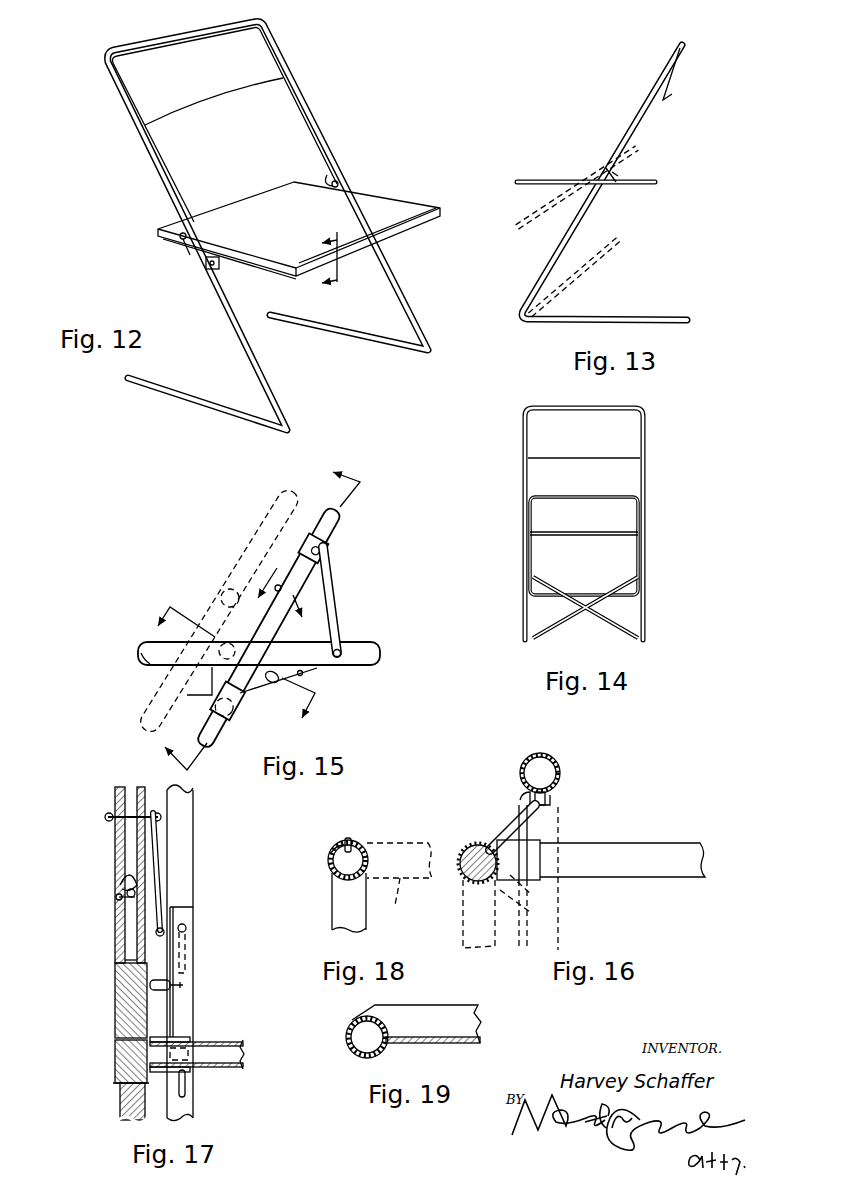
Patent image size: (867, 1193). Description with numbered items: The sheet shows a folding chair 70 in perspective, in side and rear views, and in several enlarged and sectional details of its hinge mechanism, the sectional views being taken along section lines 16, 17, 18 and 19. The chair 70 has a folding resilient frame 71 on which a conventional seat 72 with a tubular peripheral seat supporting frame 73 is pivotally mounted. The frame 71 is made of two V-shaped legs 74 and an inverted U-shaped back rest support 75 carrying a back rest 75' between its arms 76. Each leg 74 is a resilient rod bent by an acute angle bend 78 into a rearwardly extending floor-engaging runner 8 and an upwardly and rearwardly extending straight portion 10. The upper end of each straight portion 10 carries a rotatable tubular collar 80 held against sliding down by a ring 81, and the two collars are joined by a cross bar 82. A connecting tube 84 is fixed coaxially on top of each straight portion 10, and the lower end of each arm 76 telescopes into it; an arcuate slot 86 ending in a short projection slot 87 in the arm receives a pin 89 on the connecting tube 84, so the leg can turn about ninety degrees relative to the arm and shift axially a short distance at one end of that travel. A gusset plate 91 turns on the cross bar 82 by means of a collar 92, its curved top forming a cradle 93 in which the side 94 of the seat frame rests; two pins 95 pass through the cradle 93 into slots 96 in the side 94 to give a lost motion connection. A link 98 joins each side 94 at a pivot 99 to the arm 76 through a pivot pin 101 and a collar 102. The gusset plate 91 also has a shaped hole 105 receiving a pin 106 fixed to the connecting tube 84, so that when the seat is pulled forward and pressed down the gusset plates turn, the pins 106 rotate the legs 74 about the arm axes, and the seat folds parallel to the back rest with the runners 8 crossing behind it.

In FIG. 12, the floor-engaging runner 8 is at (362, 345).
In FIG. 13, the floor-engaging runner 8 is at (614, 317).
In FIG. 14, the floor-engaging runner 8 is at (613, 627).
In FIG. 18, the floor-engaging runner 8 is at (366, 912).
In FIG. 12, the straight portion 10 is at (251, 363).
In FIG. 13, the straight portion 10 is at (578, 229).
In FIG. 14, the straight portion 10 is at (645, 625).
In FIG. 17, the straight portion 10 is at (120, 1110).
In FIG. 15, the section line 16- 16 is at (243, 656).
In FIG. 15, the section line 17- 17 is at (272, 627).
In FIG. 15, the section line 18- 18 is at (290, 591).
In FIG. 12, the section line 19- 19 is at (342, 253).
In FIG. 12, the chair 70 is at (90, 147).
In FIG. 12, the folding resilient frame 71 is at (165, 210).
In FIG. 12, the seat 72 is at (393, 208).
In FIG. 14, the seat 72 is at (622, 518).
In FIG. 19, the seat 72 is at (472, 1015).
In FIG. 12, the tubular peripheral seat supporting frame 73 is at (416, 225).
In FIG. 19, the tubular peripheral seat supporting frame 73 is at (348, 1028).
In FIG. 12, the V-shaped leg 74 is at (418, 318).
In FIG. 13, the V-shaped leg 74 is at (550, 273).
In FIG. 12, the back rest support 75 is at (225, 114).
In FIG. 14, the back rest support 75 is at (519, 399).
In FIG. 12, the back rest 75' is at (231, 96).
In FIG. 13, the back rest 75' is at (687, 74).
In FIG. 14, the back rest 75' is at (599, 433).
In FIG. 12, the arm 76 is at (305, 117).
In FIG. 15, the arm 76 is at (345, 515).
In FIG. 17, the arm 76 is at (118, 792).
In FIG. 12, the acute angle bend 78 is at (280, 425).
In FIG. 15, the tubular collar 80 is at (230, 728).
In FIG. 17, the tubular collar 80 is at (115, 1058).
In FIG. 15, the ring 81 is at (224, 735).
In FIG. 17, the ring 81 is at (118, 1087).
In FIG. 14, the cross bar 82 is at (582, 535).
In FIG. 17, the cross bar 82 is at (225, 1042).
In FIG. 16, the cross bar 82 is at (648, 844).
In FIG. 12, the connecting tube 84 is at (205, 270).
In FIG. 17, the connecting tube 84 is at (115, 990).
In FIG. 17, the arcuate slot 86 is at (126, 907).
In FIG. 18, the arcuate slot 86 is at (338, 848).
In FIG. 17, the projection slot 87 is at (120, 881).
In FIG. 17, the pin 89 is at (115, 896).
In FIG. 18, the pin 89 is at (349, 836).
In FIG. 15, the gusset plate 91 is at (248, 704).
In FIG. 17, the gusset plate 91 is at (175, 1018).
In FIG. 16, the gusset plate 91 is at (540, 818).
In FIG. 16, the collar 92 is at (532, 880).
In FIG. 16, the cradle 93 is at (548, 799).
In FIG. 12, the side 94 is at (258, 272).
In FIG. 15, the side 94 is at (240, 551).
In FIG. 16, the side 94 is at (531, 758).
In FIG. 16, the pin 95 is at (552, 803).
In FIG. 17, the slot 96 is at (188, 953).
In FIG. 12, the link 98 is at (328, 178).
In FIG. 15, the link 98 is at (338, 580).
In FIG. 17, the link 98 is at (158, 858).
In FIG. 15, the pivot 99 is at (343, 658).
In FIG. 15, the pivot pin 101 is at (331, 548).
In FIG. 17, the pivot pin 101 is at (161, 816).
In FIG. 17, the collar 102 is at (110, 806).
In FIG. 15, the shaped hole 105 is at (278, 683).
In FIG. 16, the shaped hole 105 is at (521, 805).
In FIG. 15, the pin 106 is at (303, 675).
In FIG. 17, the pin 106 is at (190, 985).
In FIG. 16, the pin 106 is at (515, 826).